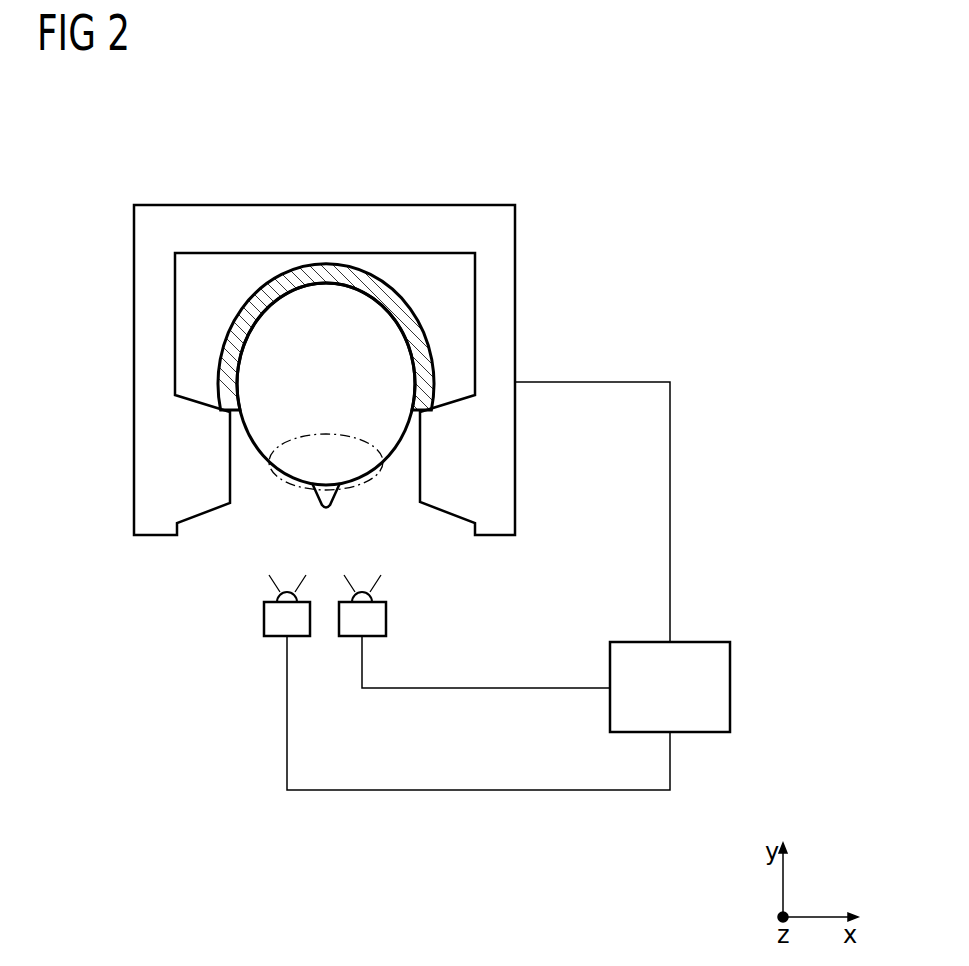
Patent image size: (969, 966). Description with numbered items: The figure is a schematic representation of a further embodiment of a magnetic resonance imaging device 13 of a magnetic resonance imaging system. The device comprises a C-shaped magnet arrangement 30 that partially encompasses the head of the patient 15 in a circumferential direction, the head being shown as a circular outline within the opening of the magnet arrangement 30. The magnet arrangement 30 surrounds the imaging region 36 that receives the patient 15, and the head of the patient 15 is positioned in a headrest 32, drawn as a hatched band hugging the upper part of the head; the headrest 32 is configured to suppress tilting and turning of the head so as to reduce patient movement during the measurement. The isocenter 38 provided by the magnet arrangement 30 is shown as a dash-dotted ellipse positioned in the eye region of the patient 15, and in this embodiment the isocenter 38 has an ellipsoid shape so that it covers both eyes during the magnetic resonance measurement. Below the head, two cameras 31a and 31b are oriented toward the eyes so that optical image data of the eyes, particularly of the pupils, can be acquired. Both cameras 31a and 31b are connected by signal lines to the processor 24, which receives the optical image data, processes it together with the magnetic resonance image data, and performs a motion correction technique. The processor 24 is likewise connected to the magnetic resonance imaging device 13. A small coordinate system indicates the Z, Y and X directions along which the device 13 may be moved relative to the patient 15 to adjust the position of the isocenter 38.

The magnetic resonance imaging device 13 is at (640, 260).
The patient 15 is at (300, 312).
The headrest 32 is at (340, 280).
The imaging region 36 is at (442, 363).
The magnet arrangement 30 is at (134, 464).
The isocenter 38 is at (283, 483).
The camera 31a is at (263, 620).
The camera 31b is at (386, 618).
The processor 24 is at (731, 688).